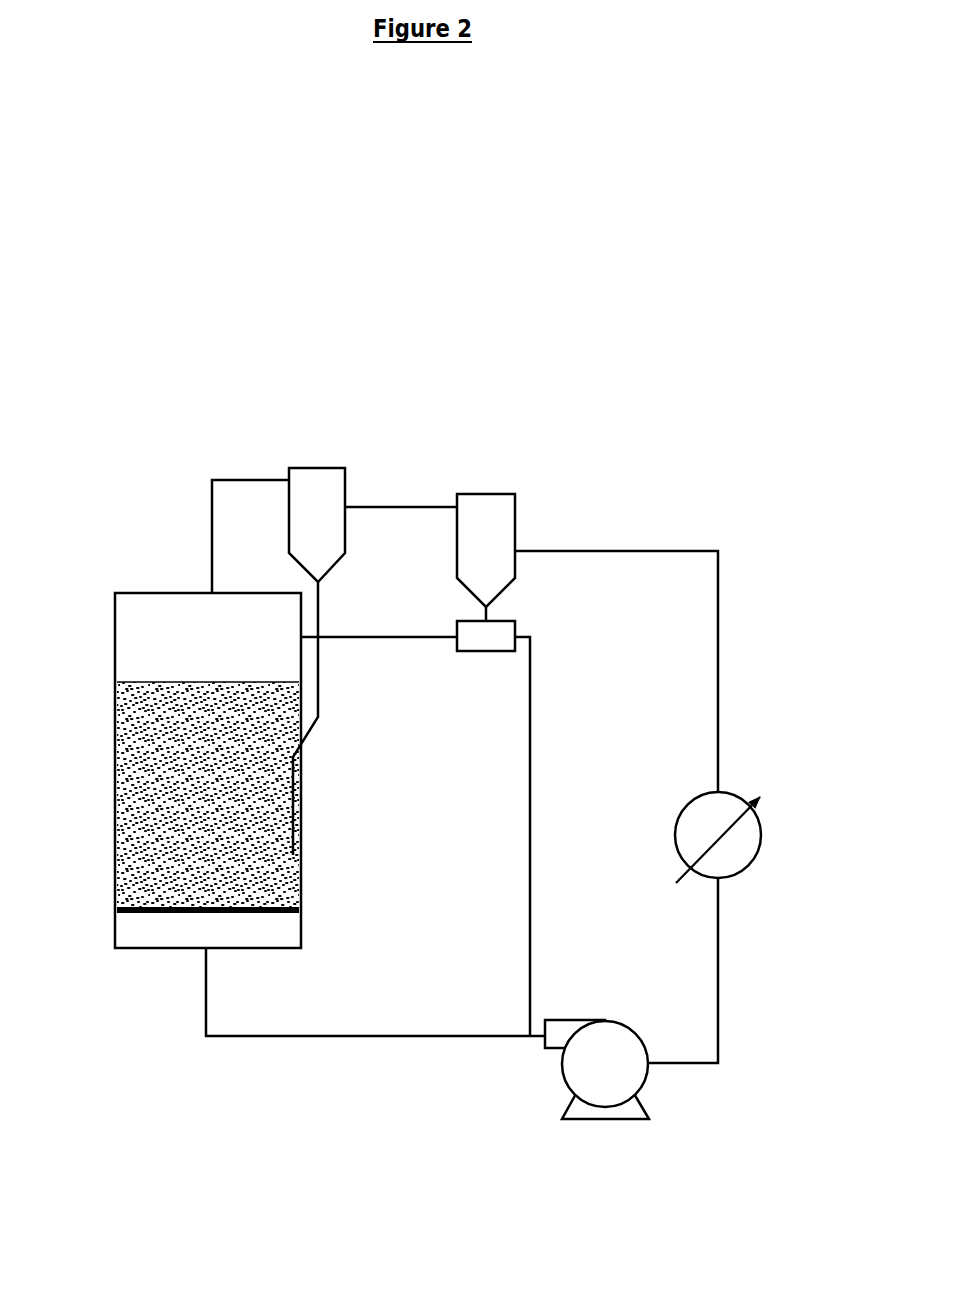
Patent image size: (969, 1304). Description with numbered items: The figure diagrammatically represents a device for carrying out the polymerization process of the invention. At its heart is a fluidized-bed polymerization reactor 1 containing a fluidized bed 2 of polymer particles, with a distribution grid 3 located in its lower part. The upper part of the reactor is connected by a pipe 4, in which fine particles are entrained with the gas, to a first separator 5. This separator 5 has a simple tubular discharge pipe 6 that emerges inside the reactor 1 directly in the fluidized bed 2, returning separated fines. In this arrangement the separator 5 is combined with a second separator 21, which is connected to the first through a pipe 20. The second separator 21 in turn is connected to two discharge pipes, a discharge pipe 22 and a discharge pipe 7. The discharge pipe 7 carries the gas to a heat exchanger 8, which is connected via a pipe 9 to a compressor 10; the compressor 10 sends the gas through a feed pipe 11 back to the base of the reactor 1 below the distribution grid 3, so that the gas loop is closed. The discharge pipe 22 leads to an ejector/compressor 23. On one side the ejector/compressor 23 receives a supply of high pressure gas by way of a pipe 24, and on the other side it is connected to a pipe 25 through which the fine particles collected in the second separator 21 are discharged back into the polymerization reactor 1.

The polymerization reactor 1 is at (158, 767).
The fluidized bed 2 is at (174, 794).
The distribution grid 3 is at (206, 962).
The pipe 4 is at (199, 534).
The separator 5 is at (292, 498).
The discharge pipe 6 is at (369, 718).
The discharge pipe 7 is at (680, 671).
The heat exchanger 8 is at (782, 837).
The pipe 9 is at (748, 970).
The compressor 10 is at (647, 1105).
The feed pipe 11 is at (375, 1033).
The pipe 20 is at (435, 457).
The second separator 21 is at (556, 536).
The discharge pipe 22 is at (543, 598).
The ejector/compressor 23 is at (543, 671).
The pipe 24 is at (565, 836).
The pipe 25 is at (399, 700).